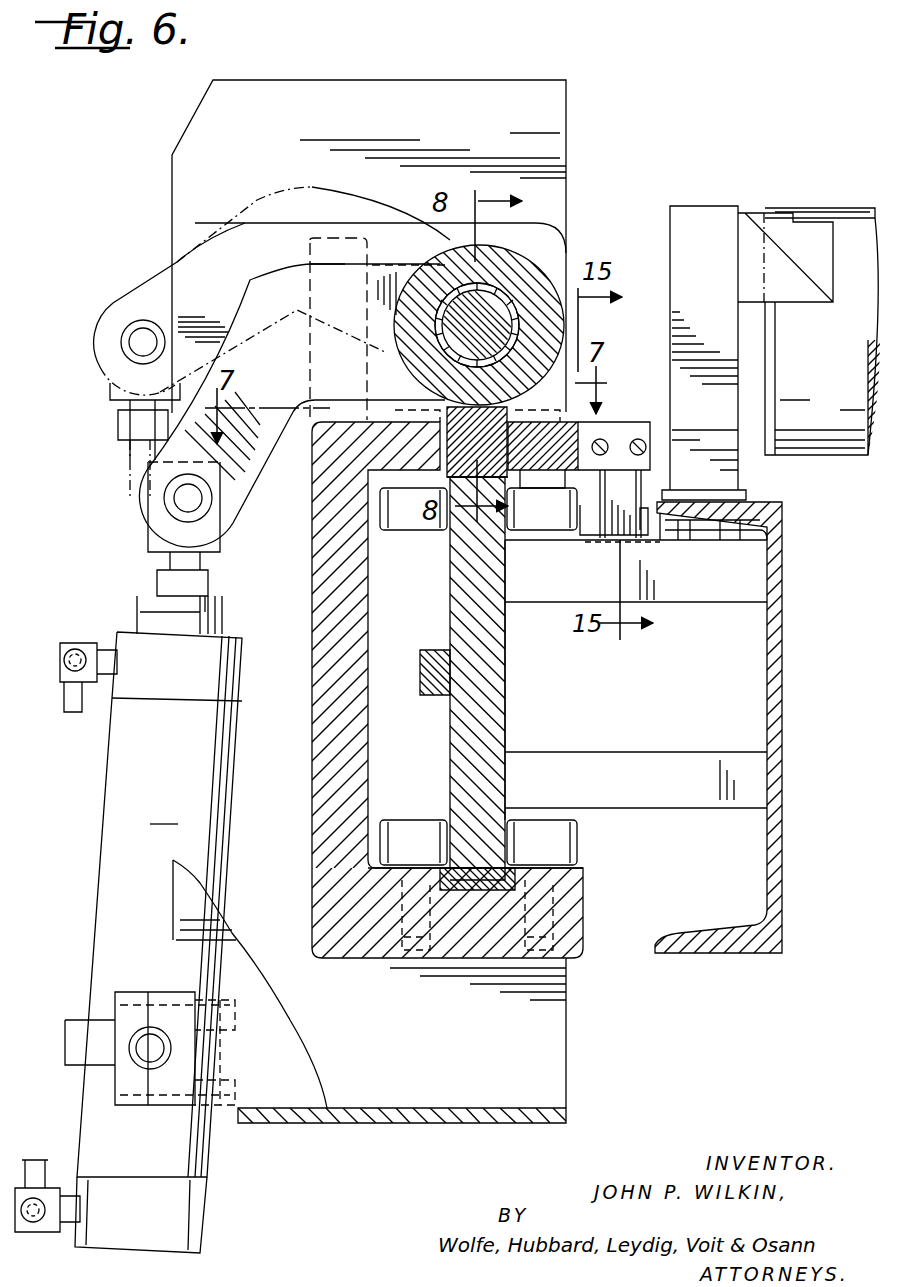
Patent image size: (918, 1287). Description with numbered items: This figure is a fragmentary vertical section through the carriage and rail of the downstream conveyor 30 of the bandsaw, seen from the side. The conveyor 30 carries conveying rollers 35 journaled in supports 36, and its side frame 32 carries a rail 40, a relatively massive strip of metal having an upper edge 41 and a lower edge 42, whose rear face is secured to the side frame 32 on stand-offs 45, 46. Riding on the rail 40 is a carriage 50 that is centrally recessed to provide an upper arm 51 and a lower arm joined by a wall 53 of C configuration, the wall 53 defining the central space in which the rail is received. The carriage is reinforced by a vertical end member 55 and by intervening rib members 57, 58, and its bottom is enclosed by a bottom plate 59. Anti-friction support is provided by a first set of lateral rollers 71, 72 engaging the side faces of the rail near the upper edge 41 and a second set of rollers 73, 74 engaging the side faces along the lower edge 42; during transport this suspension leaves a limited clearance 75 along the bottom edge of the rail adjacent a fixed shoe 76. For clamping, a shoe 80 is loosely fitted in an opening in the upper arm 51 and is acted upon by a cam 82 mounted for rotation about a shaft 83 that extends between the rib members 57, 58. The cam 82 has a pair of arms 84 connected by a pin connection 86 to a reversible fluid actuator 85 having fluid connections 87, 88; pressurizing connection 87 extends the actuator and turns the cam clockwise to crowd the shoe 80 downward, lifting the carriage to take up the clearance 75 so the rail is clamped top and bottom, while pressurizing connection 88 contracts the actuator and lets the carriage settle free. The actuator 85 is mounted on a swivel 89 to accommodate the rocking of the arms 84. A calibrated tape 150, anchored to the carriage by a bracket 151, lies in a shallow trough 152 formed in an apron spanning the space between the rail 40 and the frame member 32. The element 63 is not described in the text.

The conveyor 30 is at (792, 160).
The side frame 32 is at (782, 716).
The conveying rollers 35 is at (856, 208).
The supports 36 is at (716, 210).
The rail 40 is at (505, 672).
The upper edge 41 is at (456, 480).
The lower edge 42 is at (447, 913).
The stand-off 45 is at (692, 604).
The stand-off 46 is at (712, 810).
The carriage 50 is at (170, 216).
The upper arm 51 is at (576, 426).
The wall 53 is at (318, 624).
The end member 55 is at (515, 84).
The rib member 57 is at (533, 224).
The rib member 58 is at (296, 1042).
The bottom plate 59 is at (452, 1108).
The key 63 is at (418, 660).
The lateral roller 71 is at (400, 535).
The lateral roller 72 is at (536, 535).
The roller 73 is at (412, 822).
The roller 74 is at (560, 822).
The clearance 75 is at (450, 874).
The fixed shoe 76 is at (482, 874).
The shoe 80 is at (490, 452).
The cam 82 is at (432, 268).
The shaft 83 is at (486, 338).
The arms 84 is at (120, 300).
The reversible fluid actuator 85 is at (158, 924).
The pin connection 86 is at (176, 504).
The fluid connection 87 is at (50, 1160).
The fluid connection 88 is at (68, 712).
The swivel 89 is at (140, 1046).
The tape 150 is at (625, 502).
The bracket 151 is at (648, 442).
The trough 152 is at (650, 532).